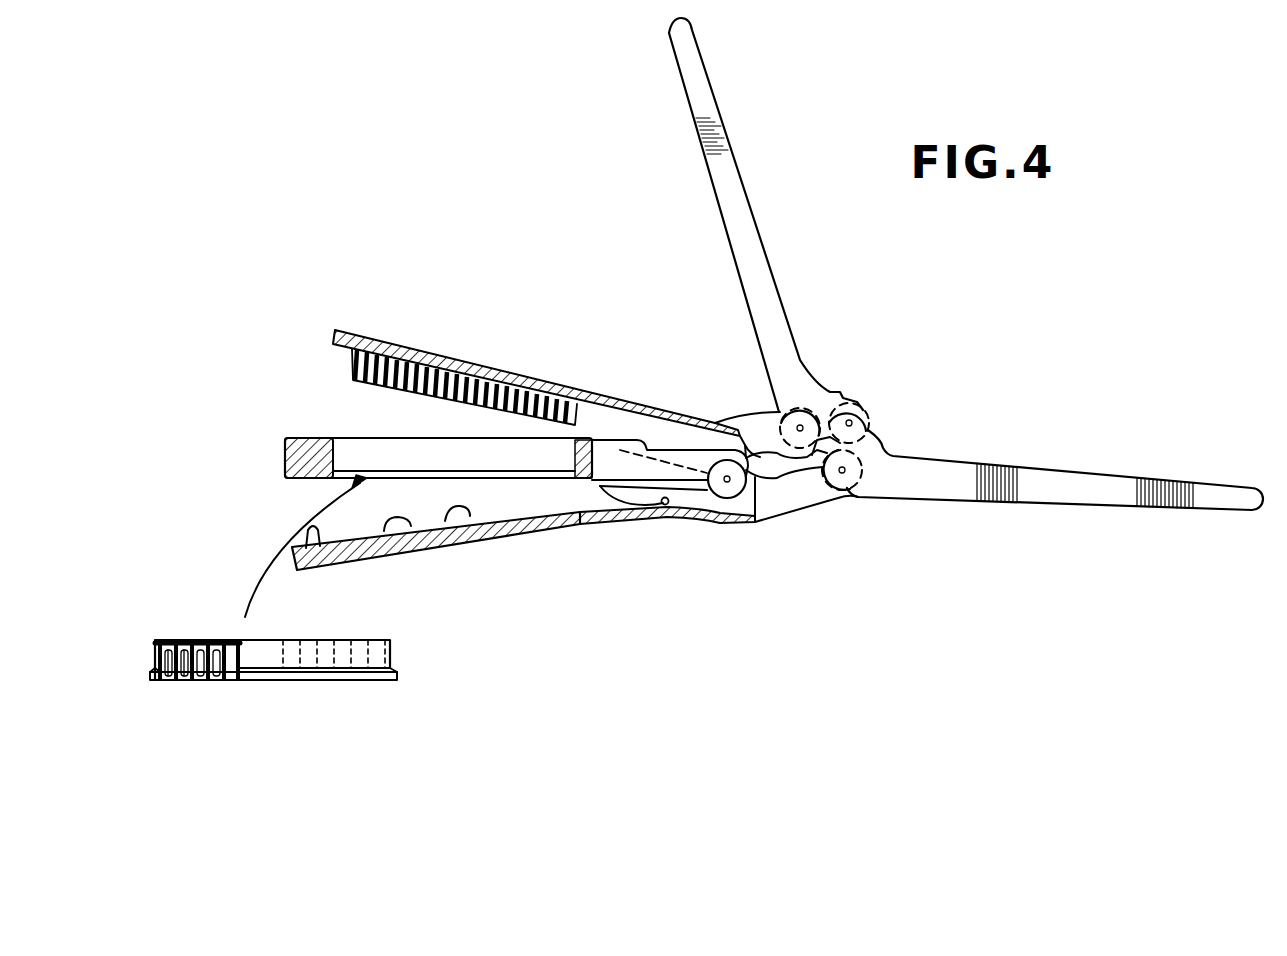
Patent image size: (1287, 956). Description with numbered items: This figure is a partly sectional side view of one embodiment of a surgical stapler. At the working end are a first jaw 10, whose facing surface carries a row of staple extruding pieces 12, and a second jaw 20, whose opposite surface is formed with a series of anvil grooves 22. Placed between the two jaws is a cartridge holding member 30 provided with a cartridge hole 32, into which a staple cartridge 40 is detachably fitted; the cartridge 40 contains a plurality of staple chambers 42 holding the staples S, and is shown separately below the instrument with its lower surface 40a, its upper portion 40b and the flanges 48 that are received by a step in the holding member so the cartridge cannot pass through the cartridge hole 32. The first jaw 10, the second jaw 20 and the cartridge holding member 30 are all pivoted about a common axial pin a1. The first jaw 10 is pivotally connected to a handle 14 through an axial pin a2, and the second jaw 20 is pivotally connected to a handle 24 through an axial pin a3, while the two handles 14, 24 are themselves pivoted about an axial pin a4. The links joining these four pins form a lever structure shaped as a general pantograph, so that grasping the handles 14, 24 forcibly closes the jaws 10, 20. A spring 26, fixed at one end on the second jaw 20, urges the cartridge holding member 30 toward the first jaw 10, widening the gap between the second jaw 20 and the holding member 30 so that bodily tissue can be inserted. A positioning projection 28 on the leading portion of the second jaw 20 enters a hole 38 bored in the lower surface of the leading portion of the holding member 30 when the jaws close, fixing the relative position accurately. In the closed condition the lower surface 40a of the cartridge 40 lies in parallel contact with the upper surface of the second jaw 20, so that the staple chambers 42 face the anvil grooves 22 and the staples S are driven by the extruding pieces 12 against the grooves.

The first jaw 10 is at (517, 372).
The staple extruding pieces 12 is at (443, 352).
The handle 14 is at (735, 216).
The second jaw 20 is at (523, 537).
The anvil grooves 22 is at (441, 533).
The handle 24 is at (1053, 498).
The spring 26 is at (665, 505).
The positioning projection 28 is at (313, 548).
The cartridge holding member 30 is at (292, 438).
The cartridge hole 32 is at (370, 450).
The hole 38 is at (300, 480).
The staple cartridge 40 is at (400, 437).
The lower surface of the staple cartridge 40a is at (372, 678).
The top of clip strip 40b is at (380, 640).
The staple chambers 42 is at (210, 681).
The flange 48 is at (152, 680).
The staples S is at (208, 642).
The axial pin a1 is at (727, 482).
The axial pin a2 is at (800, 428).
The axial pin a3 is at (842, 473).
The axial pin a4 is at (849, 423).